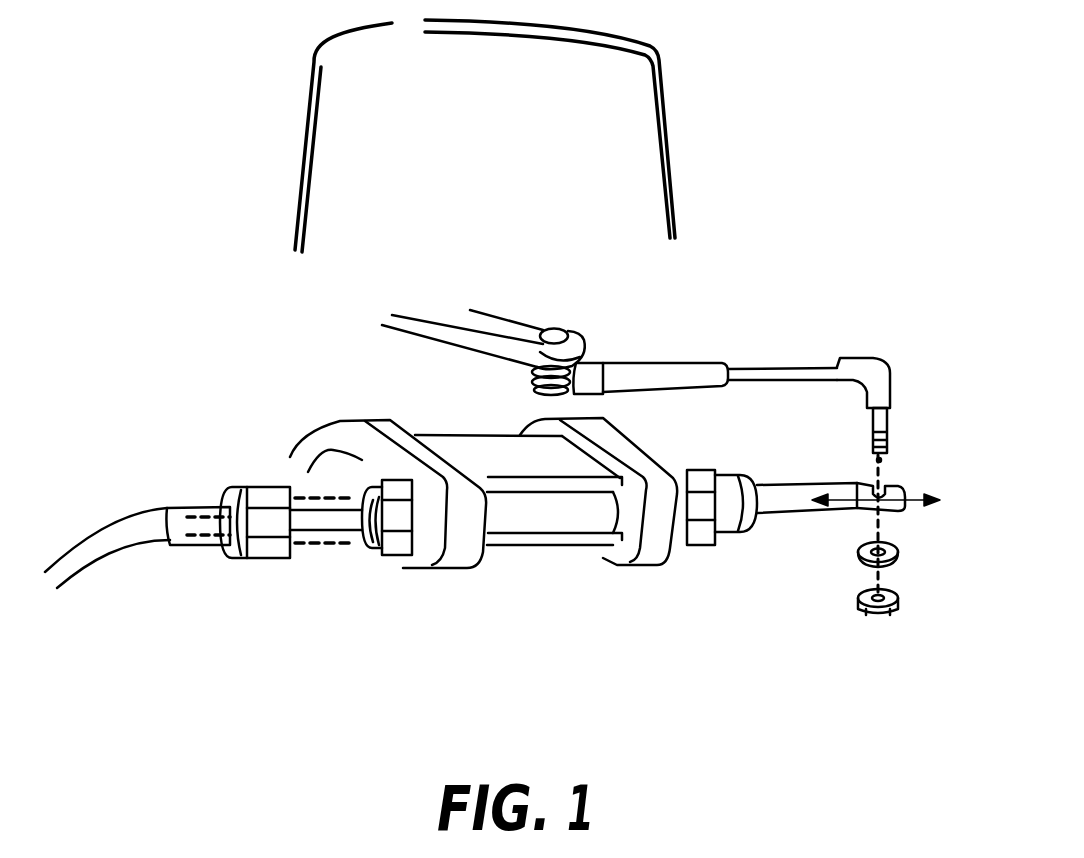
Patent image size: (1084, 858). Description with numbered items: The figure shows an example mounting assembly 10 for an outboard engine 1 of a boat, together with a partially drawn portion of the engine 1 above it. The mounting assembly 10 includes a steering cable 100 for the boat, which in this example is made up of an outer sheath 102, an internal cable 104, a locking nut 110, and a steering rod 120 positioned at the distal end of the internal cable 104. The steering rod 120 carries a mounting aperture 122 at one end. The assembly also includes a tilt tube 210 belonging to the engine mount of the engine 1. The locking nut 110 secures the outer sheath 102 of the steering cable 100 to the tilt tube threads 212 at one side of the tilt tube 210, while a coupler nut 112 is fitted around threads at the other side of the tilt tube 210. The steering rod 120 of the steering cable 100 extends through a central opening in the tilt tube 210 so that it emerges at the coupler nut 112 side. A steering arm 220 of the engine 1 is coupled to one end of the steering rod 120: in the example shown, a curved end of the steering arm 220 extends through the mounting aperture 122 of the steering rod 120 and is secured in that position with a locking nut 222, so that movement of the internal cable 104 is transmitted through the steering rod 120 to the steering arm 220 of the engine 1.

The outboard engine 1 is at (330, 48).
The mounting assembly 10 is at (172, 313).
The steering cable 100 is at (136, 489).
The outer sheath 102 is at (92, 553).
The internal cable 104 is at (307, 520).
The locking nut 110 is at (252, 488).
The coupler nut 112 is at (728, 518).
The steering rod 120 is at (792, 507).
The mounting aperture 122 is at (889, 482).
The tilt tube 210 is at (550, 527).
The tilt tube threads 212 is at (367, 543).
The steering arm 220 is at (678, 380).
The locking nut 222 is at (880, 618).